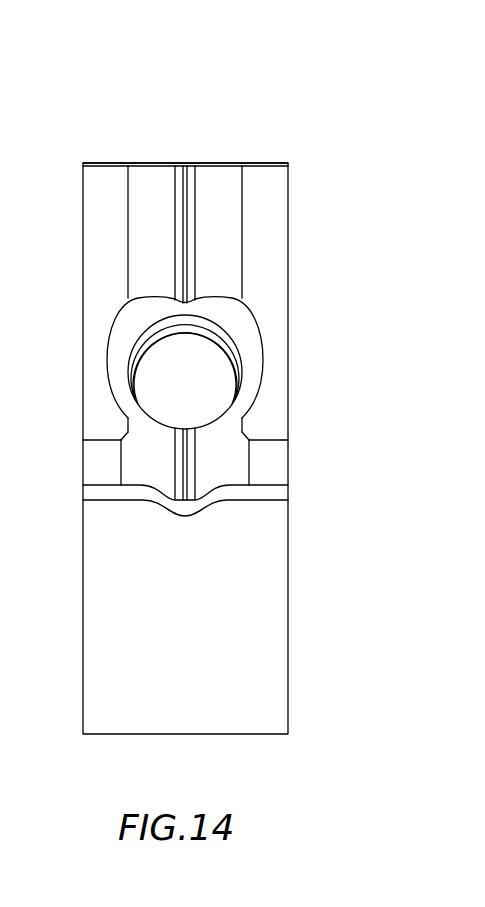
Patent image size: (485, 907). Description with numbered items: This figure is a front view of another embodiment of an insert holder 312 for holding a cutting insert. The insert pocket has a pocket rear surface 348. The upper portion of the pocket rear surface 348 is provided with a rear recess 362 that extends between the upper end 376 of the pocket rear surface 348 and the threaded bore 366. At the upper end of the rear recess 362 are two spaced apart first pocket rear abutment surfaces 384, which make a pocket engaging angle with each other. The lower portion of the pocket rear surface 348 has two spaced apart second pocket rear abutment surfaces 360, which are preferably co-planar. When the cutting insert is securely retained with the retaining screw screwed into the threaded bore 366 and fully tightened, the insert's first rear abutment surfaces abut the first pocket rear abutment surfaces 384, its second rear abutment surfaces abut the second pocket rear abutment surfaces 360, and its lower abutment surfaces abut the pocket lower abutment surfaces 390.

The assembly 312 is at (176, 73).
The first pocket rear abutment surfaces 384 is at (155, 182).
The rear recess 362 is at (178, 170).
The upper end 376 is at (284, 182).
The pocket rear surface 348 is at (236, 262).
The threaded bore 366 is at (207, 393).
The second pocket rear abutment surfaces 360 is at (102, 452).
The pocket lower abutment surfaces 390 is at (98, 483).